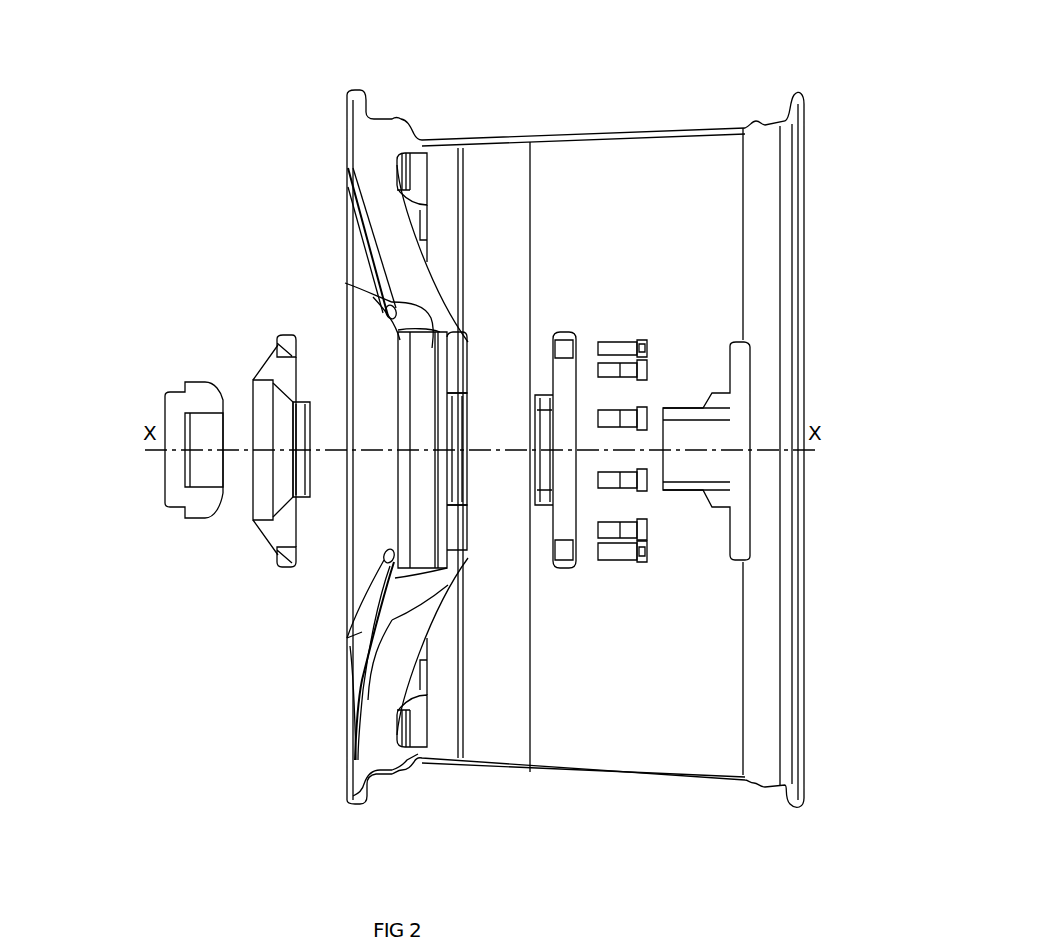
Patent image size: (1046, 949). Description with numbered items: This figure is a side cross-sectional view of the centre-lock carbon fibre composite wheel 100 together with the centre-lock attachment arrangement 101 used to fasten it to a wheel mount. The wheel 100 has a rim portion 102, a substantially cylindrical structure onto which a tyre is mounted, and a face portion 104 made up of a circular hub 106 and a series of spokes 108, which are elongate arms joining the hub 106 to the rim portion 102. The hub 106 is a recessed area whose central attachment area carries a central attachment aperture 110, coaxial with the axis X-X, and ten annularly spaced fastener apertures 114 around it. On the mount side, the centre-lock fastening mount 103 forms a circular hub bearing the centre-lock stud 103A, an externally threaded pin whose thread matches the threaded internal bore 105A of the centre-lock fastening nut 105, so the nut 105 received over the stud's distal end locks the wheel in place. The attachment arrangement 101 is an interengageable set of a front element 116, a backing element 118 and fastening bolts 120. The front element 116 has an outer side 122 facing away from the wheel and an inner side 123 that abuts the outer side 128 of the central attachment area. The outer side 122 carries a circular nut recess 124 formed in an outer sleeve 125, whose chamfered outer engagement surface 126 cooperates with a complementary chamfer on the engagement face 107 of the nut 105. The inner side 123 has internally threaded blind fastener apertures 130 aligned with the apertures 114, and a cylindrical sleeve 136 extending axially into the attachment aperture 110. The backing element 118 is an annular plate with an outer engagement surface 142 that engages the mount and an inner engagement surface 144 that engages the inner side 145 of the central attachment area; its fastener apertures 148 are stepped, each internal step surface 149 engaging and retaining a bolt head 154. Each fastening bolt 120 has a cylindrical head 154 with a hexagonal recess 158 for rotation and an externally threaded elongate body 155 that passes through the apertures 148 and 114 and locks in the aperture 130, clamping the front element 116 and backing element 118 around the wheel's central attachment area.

The centre-lock carbon fibre composite wheel 100 is at (420, 72).
The centre-lock attachment arrangement 101 is at (652, 645).
The rim portion 102 is at (637, 774).
The centre-lock fastening mount 103 is at (706, 429).
The centre-lock stud 103A is at (684, 487).
The face portion 104 is at (325, 712).
The centre-lock fastening nut 105 is at (137, 458).
The threaded internal bore 105A is at (200, 470).
The hub 106 is at (437, 348).
The engagement face 107 is at (215, 394).
The spokes 108 is at (375, 215).
The central attachment aperture 110 is at (456, 473).
The fastener apertures 114 is at (466, 340).
The front element 116 is at (265, 515).
The backing element 118 is at (552, 333).
The fastening bolts 120 is at (592, 620).
The outer side 122 is at (256, 360).
The inner side 123 is at (301, 550).
The nut recess 124 is at (238, 437).
The outer sleeve 125 is at (262, 497).
The outer engagement surface 126 is at (277, 408).
The outer side of the central attachment area 128 is at (440, 516).
The fastener apertures of the front element 130 is at (290, 338).
The cylindrical sleeve 136 is at (302, 400).
The outer engagement surface of the backing element 142 is at (580, 566).
The inner engagement surface of the backing element 144 is at (540, 372).
The inner side of the central attachment area 145 is at (468, 363).
The fastener apertures of the backing element 148 is at (572, 352).
The internal step surface 149 is at (575, 345).
The head 154 is at (646, 368).
The elongate body 155 is at (604, 345).
The hexagonal recess 158 is at (646, 362).